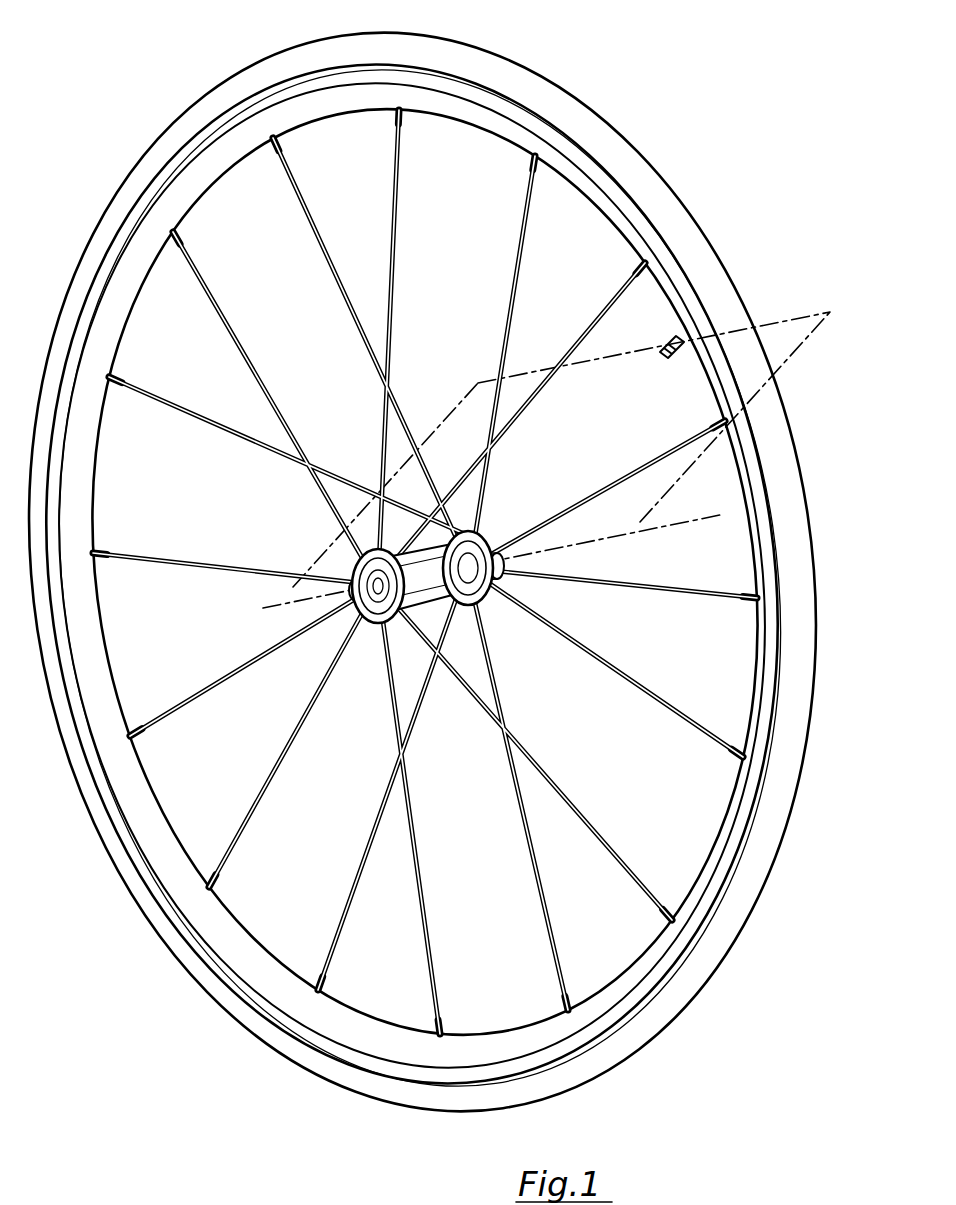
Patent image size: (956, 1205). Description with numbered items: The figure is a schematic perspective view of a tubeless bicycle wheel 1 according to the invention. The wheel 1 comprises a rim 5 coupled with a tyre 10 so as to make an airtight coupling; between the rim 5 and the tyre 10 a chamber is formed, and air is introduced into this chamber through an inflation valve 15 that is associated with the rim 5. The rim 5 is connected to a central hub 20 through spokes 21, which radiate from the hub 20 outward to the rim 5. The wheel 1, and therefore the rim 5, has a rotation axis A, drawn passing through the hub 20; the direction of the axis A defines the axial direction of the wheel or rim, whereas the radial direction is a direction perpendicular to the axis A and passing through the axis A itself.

The tubeless bicycle wheel 1 is at (692, 132).
The tyre 10 is at (692, 252).
The rim 5 is at (148, 812).
The hub 20 is at (486, 540).
The spokes 21 is at (284, 750).
The inflation valve 15 is at (666, 354).
The rotation axis A is at (263, 608).